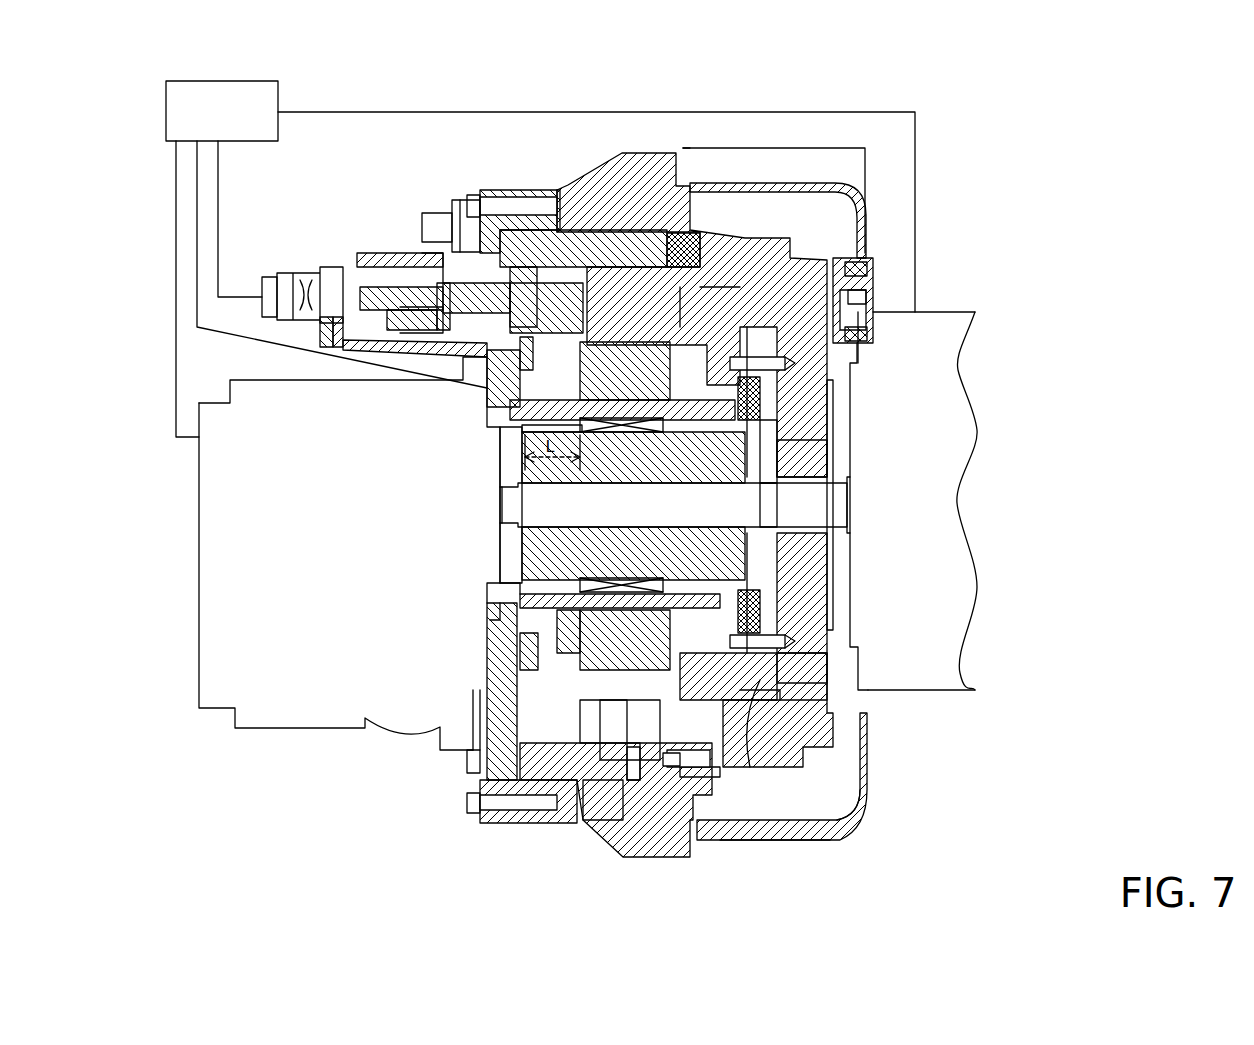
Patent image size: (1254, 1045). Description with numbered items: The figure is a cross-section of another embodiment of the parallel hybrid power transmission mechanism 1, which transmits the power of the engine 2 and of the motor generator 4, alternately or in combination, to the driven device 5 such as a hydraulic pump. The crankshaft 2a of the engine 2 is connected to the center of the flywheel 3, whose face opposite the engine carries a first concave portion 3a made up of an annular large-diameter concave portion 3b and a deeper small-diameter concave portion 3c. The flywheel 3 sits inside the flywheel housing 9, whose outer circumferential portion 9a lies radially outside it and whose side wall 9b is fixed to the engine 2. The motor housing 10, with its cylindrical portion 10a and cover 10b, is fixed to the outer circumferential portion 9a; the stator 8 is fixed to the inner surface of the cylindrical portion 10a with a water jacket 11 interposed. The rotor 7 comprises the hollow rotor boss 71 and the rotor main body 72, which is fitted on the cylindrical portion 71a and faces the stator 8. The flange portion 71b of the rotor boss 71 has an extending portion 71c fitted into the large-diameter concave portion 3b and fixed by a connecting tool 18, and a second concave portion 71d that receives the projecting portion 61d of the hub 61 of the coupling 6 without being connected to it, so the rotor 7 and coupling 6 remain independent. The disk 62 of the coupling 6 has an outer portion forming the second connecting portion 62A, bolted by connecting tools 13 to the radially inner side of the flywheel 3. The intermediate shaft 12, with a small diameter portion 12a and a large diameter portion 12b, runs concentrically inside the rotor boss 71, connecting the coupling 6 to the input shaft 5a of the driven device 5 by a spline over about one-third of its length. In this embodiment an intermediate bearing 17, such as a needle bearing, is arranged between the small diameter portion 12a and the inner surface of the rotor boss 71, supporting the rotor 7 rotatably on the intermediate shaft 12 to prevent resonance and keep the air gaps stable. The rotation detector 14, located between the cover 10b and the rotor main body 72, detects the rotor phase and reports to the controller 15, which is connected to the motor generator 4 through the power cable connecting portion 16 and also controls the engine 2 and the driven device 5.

The parallel hybrid power transmission mechanism 1 is at (980, 229).
The engine 2 is at (966, 697).
The crankshaft 2a is at (850, 505).
The flywheel 3 is at (862, 768).
The first concave portion 3a is at (1112, 262).
The large-diameter concave portion 3b is at (870, 268).
The small-diameter concave portion 3c is at (872, 335).
The motor generator 4 is at (530, 848).
The driven device 5 is at (176, 631).
The input shaft 5a is at (547, 530).
The coupling 6 is at (833, 540).
The rotor 7 is at (600, 770).
The stator 8 is at (615, 740).
The flywheel housing 9 is at (927, 835).
The outer circumferential portion 9a is at (820, 840).
The side wall 9b is at (858, 805).
The motor housing 10 is at (380, 770).
The cylindrical portion 10a is at (510, 823).
The cover 10b is at (490, 787).
The water jacket 11 is at (623, 730).
The intermediate shaft 12 is at (762, 533).
The small diameter portion 12a is at (550, 428).
The large diameter portion 12b is at (758, 432).
The connecting tool 13 is at (800, 362).
The rotation detector 14 is at (525, 425).
The controller 15 is at (166, 100).
The power cable connecting portion 16 is at (258, 287).
The intermediate bearing 17 is at (580, 583).
The connecting tool 18 is at (868, 297).
The hub 61 is at (752, 400).
The projecting portion 61d is at (700, 770).
The disk 62 is at (770, 598).
The second connecting portion 62A is at (780, 696).
The rotor boss 71 is at (720, 80).
The cylindrical portion 71a is at (630, 407).
The flange portion 71b is at (698, 300).
The extending portion 71c is at (763, 690).
The second concave portion 71d is at (783, 460).
The rotor main body 72 is at (603, 353).